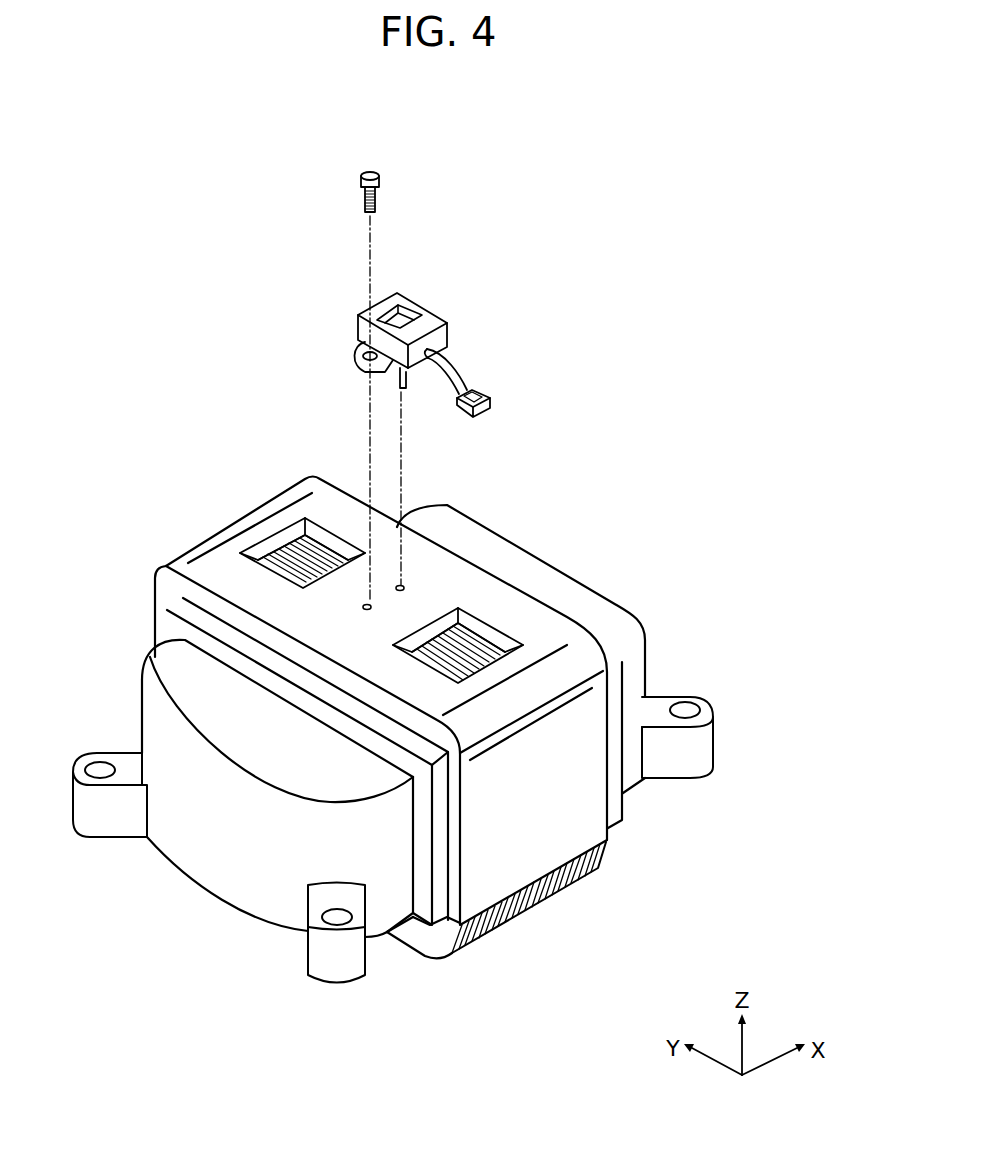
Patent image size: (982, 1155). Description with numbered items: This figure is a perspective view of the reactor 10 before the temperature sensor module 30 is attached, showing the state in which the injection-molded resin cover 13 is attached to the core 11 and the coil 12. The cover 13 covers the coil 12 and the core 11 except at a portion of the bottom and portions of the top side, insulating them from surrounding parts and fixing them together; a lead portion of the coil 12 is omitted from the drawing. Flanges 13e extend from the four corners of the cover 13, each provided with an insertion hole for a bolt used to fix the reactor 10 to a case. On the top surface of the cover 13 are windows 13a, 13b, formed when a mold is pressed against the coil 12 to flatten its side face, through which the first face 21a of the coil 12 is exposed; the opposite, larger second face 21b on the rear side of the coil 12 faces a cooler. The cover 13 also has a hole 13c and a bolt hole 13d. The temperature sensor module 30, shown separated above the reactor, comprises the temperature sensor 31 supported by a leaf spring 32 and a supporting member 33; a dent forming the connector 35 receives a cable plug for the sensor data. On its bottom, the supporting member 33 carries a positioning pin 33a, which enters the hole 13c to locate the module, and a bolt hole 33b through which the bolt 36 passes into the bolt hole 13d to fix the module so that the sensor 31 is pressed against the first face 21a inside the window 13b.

The reactor 10 is at (141, 285).
The core 11 is at (258, 875).
The coil 12 is at (540, 903).
The cover 13 is at (185, 855).
The window 13a is at (289, 561).
The window 13b is at (471, 649).
The hole 13c is at (404, 588).
The bolt hole 13d is at (371, 607).
The flange 13e is at (696, 754).
The first face 21a is at (283, 538).
The second face 21b is at (406, 952).
The temperature sensor module 30 is at (418, 368).
The temperature sensor 31 is at (491, 403).
The leaf spring 32 is at (463, 380).
The supporting member 33 is at (450, 333).
The positioning pin 33a is at (407, 382).
The bolt hole 33b is at (356, 354).
The connector 35 is at (409, 312).
The bolt 36 is at (378, 177).